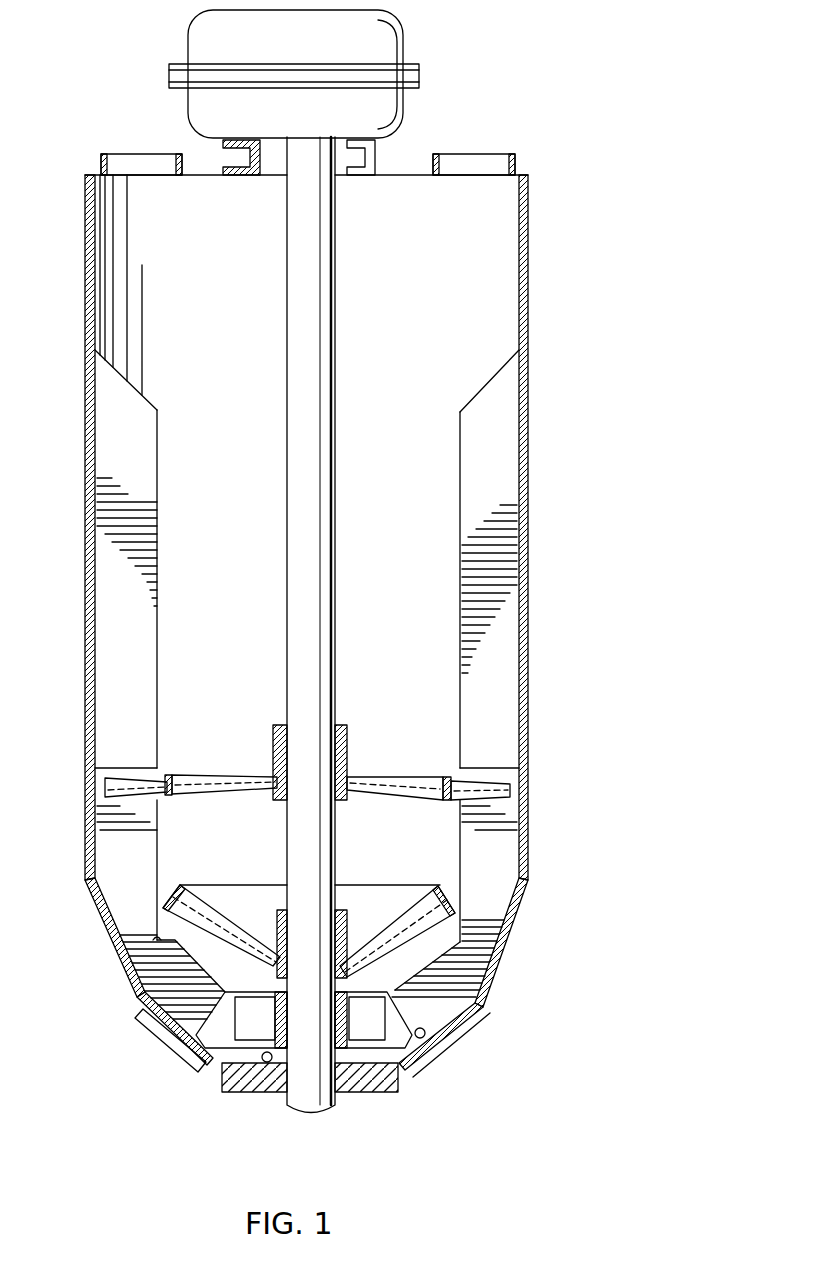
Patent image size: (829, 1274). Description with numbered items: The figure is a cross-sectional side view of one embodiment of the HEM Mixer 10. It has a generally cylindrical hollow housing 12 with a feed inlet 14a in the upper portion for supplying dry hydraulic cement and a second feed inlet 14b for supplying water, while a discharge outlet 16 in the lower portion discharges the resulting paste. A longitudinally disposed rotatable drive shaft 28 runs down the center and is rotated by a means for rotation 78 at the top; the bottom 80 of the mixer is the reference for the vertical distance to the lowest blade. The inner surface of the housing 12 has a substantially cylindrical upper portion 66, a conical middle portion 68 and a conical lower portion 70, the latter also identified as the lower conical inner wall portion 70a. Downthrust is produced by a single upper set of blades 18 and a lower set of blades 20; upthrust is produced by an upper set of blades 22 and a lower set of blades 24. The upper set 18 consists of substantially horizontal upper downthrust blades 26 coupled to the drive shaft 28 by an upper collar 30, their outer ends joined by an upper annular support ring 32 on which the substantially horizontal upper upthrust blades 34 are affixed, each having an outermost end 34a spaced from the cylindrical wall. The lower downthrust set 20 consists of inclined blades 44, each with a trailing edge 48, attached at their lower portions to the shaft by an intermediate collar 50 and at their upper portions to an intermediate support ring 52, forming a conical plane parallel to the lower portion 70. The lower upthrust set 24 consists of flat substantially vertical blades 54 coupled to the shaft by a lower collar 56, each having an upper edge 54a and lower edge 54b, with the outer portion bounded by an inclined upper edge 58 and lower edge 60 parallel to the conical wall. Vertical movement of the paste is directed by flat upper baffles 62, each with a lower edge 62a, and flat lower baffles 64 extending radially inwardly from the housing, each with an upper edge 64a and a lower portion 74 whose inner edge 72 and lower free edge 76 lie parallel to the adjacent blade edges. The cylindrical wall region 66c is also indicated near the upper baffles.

The HEM Mixer 10 is at (604, 186).
The housing 12 is at (528, 300).
The feed inlet 14a is at (130, 160).
The feed inlet 14b is at (487, 160).
The discharge outlet 16 is at (150, 1040).
The upper set of downthrust blades 18 is at (237, 768).
The lower set of downthrust blades 20 is at (221, 893).
The upper set of upthrust blades 22 is at (125, 770).
The lower set of upthrust blades 24 is at (378, 1092).
The upper downthrust blade 26 is at (385, 782).
The drive shaft 28 is at (287, 315).
The upper collar 30 is at (338, 725).
The upper annular support ring 32 is at (168, 790).
The upper upthrust blade 34 is at (480, 788).
The outermost end of upper upthrust blade 34a is at (512, 795).
The inclined downthrust blade 44 is at (428, 915).
The trailing edge 48 is at (480, 935).
The intermediate collar 50 is at (277, 915).
The intermediate support ring 52 is at (450, 898).
The lower upthrust blade 54 is at (210, 1078).
The upper edge of lower upthrust blade 54a is at (263, 1000).
The lower edge of lower upthrust blade 54b is at (250, 1065).
The lower collar 56 is at (355, 1005).
The upper edge 58 is at (410, 1003).
The lower edge 60 is at (417, 1060).
The upper baffle 62 is at (490, 488).
The lower edge of upper baffle 62a is at (105, 778).
The lower baffle 64 is at (110, 882).
The upper edge of lower baffle 64a is at (95, 790).
The cylindrical upper portion 66 is at (85, 262).
The liner ledge 66c is at (507, 792).
The conical middle portion 68 is at (115, 942).
The conical lower portion 70 is at (465, 1030).
The lower conical inner wall portion 70a is at (430, 1047).
The inner edge 72 is at (150, 985).
The lower portion of lower baffle 74 is at (145, 1018).
The lower free edge 76 is at (185, 1063).
The means for rotation 78 is at (398, 50).
The bottom of the mixer 80 is at (268, 1065).